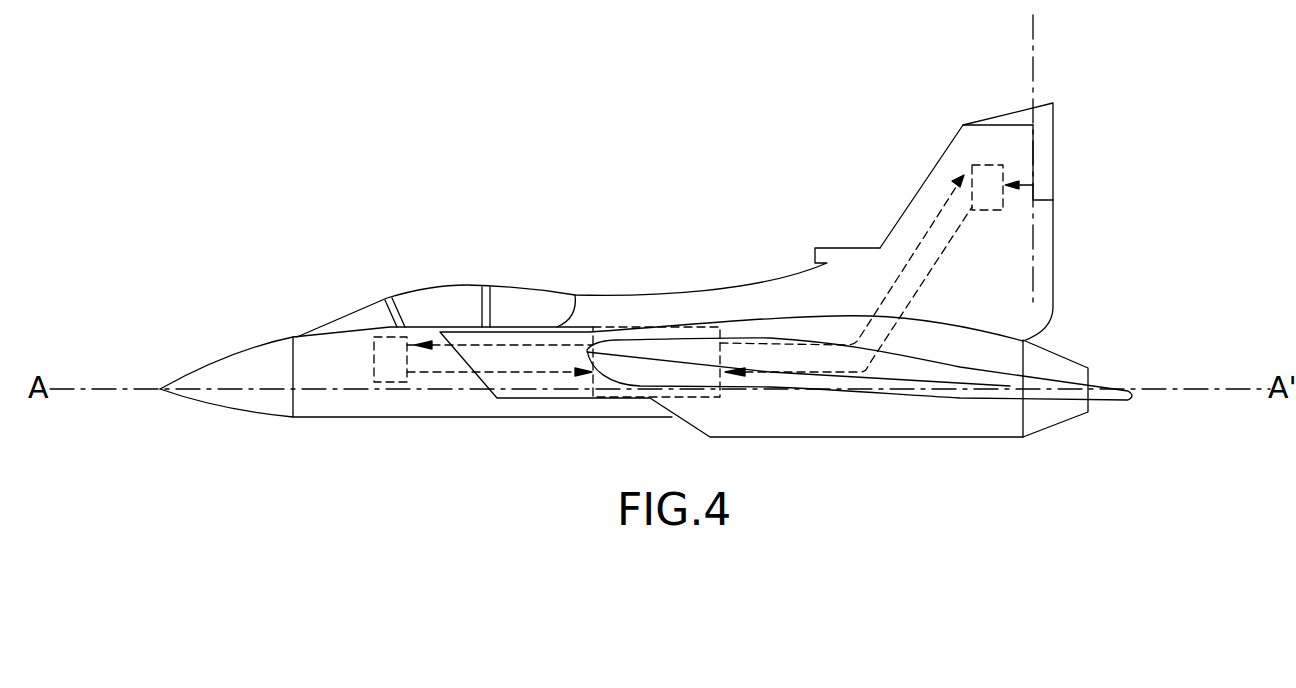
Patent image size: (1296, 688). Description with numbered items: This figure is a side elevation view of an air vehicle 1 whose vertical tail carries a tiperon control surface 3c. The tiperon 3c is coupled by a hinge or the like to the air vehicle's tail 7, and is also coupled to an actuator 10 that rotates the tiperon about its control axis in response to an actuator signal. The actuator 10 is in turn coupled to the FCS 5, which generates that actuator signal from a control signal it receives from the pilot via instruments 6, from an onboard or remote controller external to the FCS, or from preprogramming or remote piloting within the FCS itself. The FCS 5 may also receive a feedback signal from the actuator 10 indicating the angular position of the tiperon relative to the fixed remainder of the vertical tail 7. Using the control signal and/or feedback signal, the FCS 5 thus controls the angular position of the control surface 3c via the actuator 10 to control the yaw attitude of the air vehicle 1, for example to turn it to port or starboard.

The air vehicle 1 is at (654, 126).
The tiperon control surface 3c is at (1086, 129).
The tail 7 is at (1086, 231).
The FCS 5 is at (652, 327).
The instruments 6 is at (378, 337).
The actuator 10 is at (991, 165).